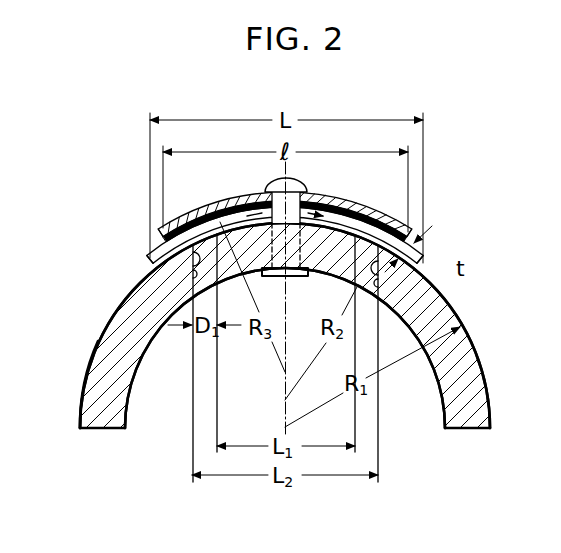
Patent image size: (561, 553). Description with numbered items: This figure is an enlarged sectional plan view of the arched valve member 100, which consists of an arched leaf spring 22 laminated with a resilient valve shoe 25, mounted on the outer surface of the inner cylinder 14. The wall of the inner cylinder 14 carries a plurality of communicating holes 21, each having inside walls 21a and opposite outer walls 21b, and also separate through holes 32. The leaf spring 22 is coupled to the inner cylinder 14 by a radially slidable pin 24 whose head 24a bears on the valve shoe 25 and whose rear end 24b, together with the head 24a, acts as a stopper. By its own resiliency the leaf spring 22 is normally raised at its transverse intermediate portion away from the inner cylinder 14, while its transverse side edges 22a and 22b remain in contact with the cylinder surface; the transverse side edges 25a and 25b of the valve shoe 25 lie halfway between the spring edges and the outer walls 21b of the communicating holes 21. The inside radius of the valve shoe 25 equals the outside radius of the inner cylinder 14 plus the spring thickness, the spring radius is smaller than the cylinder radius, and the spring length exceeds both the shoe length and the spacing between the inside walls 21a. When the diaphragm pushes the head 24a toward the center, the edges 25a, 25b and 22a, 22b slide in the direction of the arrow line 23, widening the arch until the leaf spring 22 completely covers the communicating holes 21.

The inner cylinder 14 is at (88, 367).
The communicating holes 21 is at (463, 326).
The inside walls of the communicating holes 21a is at (169, 318).
The outer walls of the communicating holes 21b is at (143, 282).
The arched leaf spring 22 is at (156, 250).
The transverse side edge of the leaf spring 22a is at (422, 261).
The transverse side edge of the leaf spring 22b is at (152, 262).
The arrow line A23 23 is at (253, 202).
The pin 24 is at (277, 235).
The head of the pin 24a is at (306, 190).
The rear end of the pin 24b is at (298, 277).
The resilient valve shoe 25 is at (406, 230).
The transverse side edge of the valve shoe 25a is at (410, 231).
The transverse side edge of the valve shoe 25b is at (162, 227).
The through holes 32 is at (285, 358).
The arched valve member 100 is at (163, 237).